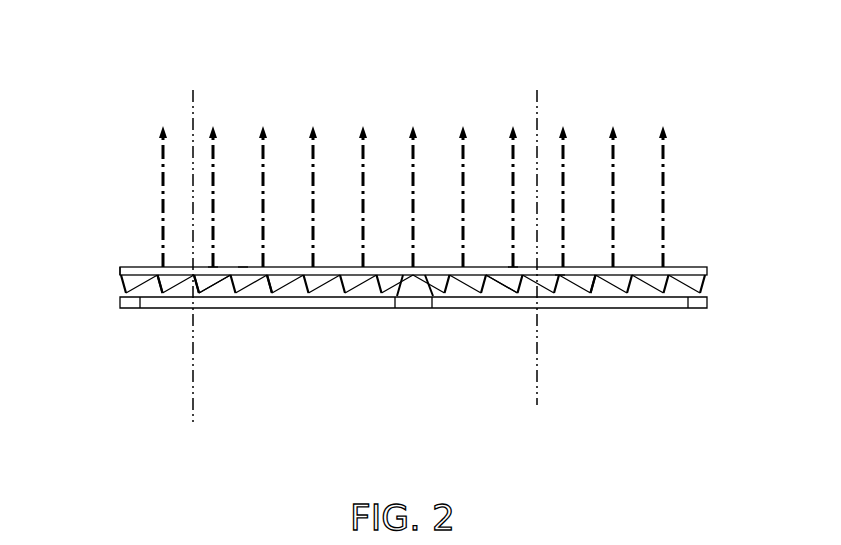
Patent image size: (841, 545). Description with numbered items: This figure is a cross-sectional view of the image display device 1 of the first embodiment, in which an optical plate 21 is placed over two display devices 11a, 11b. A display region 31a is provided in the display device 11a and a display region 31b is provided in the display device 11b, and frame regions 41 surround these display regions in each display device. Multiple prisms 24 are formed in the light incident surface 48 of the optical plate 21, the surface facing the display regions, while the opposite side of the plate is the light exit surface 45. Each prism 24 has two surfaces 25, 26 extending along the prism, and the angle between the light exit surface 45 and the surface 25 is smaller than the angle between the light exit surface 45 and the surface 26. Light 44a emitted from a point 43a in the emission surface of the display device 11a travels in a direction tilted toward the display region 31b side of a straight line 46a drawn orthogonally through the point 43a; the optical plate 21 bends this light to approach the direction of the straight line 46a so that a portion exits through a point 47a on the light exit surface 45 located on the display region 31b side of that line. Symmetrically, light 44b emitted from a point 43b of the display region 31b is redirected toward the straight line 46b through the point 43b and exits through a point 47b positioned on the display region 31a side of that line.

The image display device 1 is at (406, 223).
The display device 11a is at (330, 304).
The display device 11b is at (614, 304).
The optical plate 21 is at (406, 234).
The prism 24 is at (120, 276).
The surface 25 is at (248, 294).
The surface 26 is at (221, 300).
The display region 31a is at (153, 291).
The display region 31b is at (596, 293).
The frame region 41 is at (131, 309).
The point 43a is at (190, 293).
The point 43b is at (560, 274).
The light 44a is at (213, 170).
The light 44b is at (513, 168).
The light exit surface 45 is at (243, 266).
The straight line 46a is at (193, 90).
The straight line 46b is at (537, 90).
The point 47a is at (213, 266).
The point 47b is at (513, 266).
The light incident surface 48 is at (283, 295).